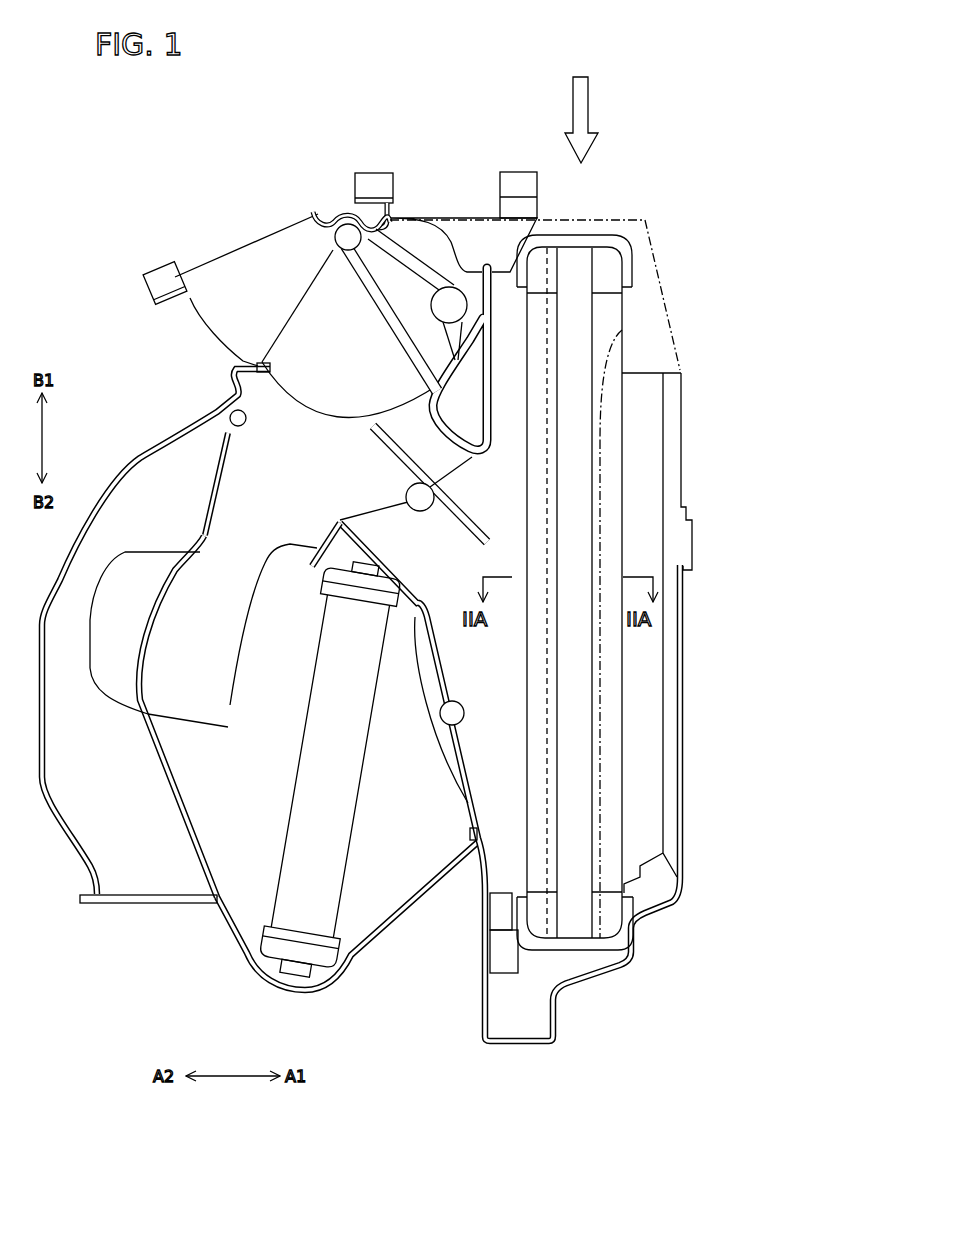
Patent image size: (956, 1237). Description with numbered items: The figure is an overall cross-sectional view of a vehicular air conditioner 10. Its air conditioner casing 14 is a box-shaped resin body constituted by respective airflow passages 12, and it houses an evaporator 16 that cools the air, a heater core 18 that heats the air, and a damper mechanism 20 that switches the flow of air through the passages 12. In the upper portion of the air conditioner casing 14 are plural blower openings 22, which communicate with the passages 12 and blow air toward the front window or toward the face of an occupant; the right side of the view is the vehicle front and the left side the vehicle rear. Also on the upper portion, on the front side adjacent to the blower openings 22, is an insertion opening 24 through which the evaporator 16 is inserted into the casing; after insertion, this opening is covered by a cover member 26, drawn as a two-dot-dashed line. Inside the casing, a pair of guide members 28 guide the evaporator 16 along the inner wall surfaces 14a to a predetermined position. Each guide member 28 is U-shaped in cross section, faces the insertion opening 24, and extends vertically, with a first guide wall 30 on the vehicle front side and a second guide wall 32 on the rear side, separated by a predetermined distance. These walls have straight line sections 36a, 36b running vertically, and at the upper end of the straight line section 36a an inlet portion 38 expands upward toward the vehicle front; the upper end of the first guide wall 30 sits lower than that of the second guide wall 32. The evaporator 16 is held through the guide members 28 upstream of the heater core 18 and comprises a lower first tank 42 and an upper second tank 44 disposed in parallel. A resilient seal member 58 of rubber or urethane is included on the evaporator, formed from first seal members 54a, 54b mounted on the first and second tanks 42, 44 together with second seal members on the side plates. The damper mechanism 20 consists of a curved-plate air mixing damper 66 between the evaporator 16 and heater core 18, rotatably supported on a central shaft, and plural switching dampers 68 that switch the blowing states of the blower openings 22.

The vehicular air conditioner 10 is at (287, 131).
The airflow passage 12 is at (207, 827).
The air conditioner casing 14 is at (687, 450).
The inner wall surface 14a is at (643, 412).
The evaporator 16 is at (637, 748).
The heater core 18 is at (362, 818).
The damper mechanism 20 is at (450, 663).
The blower opening 22 is at (447, 226).
The insertion opening 24 is at (640, 313).
The cover member 26 is at (615, 216).
The guide member 28 is at (607, 510).
The first guide wall 30 is at (605, 665).
The second guide wall 32 is at (545, 705).
The straight line section 36a is at (603, 792).
The straight line section 36b is at (528, 745).
The inlet portion 38 is at (615, 346).
The first tank 42 is at (612, 915).
The second tank 44 is at (605, 275).
The first seal member 54a is at (575, 940).
The first seal member 54b is at (573, 242).
The seal member 58 is at (575, 847).
The air mixing damper 66 is at (460, 750).
The switching damper 68 is at (427, 277).